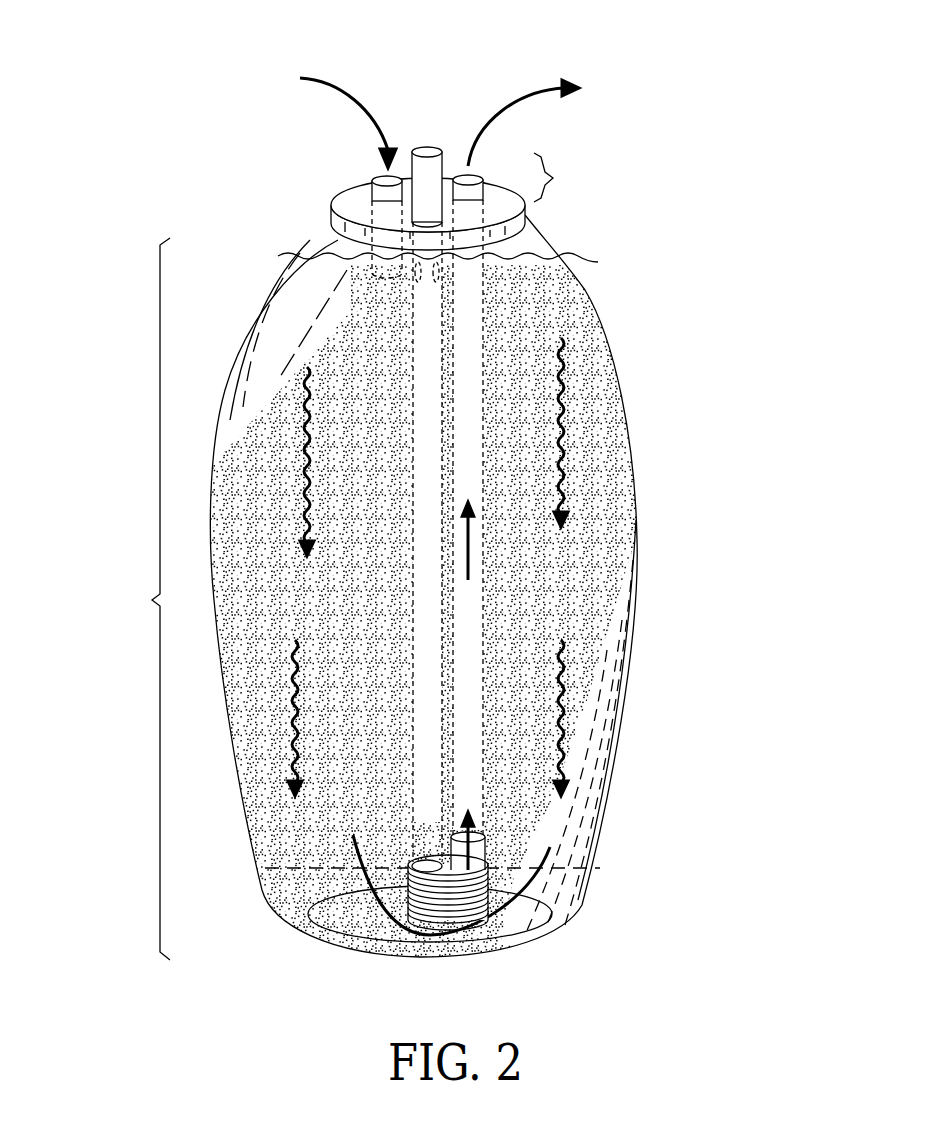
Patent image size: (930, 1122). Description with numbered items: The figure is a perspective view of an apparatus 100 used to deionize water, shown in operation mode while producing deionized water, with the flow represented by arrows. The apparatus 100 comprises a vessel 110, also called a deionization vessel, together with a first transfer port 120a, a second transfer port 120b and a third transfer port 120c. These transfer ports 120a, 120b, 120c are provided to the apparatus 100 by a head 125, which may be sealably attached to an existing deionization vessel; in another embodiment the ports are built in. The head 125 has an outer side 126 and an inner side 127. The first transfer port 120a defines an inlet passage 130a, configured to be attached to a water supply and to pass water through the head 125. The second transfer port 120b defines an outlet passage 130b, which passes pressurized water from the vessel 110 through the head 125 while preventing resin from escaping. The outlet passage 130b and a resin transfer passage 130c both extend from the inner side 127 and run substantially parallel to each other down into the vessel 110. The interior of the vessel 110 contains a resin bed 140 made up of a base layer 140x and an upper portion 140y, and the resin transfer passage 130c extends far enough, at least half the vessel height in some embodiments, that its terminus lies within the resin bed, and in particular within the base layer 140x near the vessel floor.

The apparatus 100 is at (660, 115).
The vessel 110 is at (622, 355).
The first transfer port 120a is at (355, 198).
The second transfer port 120b is at (495, 200).
The third transfer port 120c is at (338, 228).
The head 125 is at (553, 178).
The outer side 126 is at (462, 168).
The inner side 127 is at (545, 275).
The inlet passage 130a is at (375, 178).
The outlet passage 130b is at (472, 178).
The resin transfer passage 130c is at (428, 148).
The resin bed 140 is at (152, 600).
The base layer 140x is at (555, 907).
The upper portion 140y is at (602, 692).